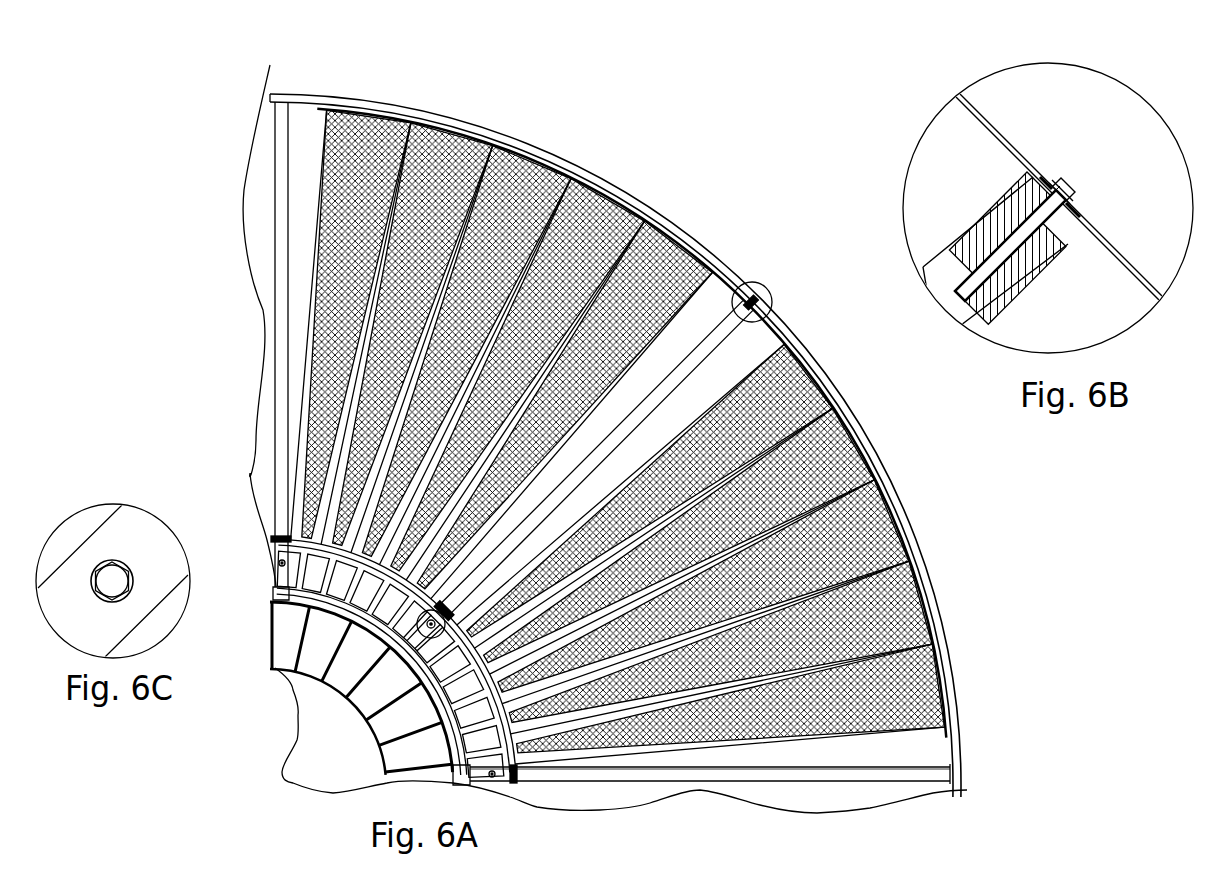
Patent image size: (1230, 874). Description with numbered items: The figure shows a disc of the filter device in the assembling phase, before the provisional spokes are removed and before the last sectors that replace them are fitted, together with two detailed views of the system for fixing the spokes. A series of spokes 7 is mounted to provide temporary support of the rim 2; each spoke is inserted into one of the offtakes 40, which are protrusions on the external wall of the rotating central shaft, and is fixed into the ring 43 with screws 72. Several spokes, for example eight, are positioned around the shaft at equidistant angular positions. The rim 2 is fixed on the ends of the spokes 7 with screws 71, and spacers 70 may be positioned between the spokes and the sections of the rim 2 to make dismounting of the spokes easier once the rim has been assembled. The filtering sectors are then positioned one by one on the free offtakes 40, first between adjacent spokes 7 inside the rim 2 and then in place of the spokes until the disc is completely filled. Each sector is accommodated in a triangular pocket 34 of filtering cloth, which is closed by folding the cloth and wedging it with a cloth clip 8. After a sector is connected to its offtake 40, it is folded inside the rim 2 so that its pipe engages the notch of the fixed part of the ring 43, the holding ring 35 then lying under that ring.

In FIG. 6A, the rim 2 is at (598, 170).
In FIG. 6B, the rim 2 is at (997, 152).
In FIG. 6A, the spoke 7 is at (741, 283).
In FIG. 6B, the spoke 7 is at (977, 320).
In FIG. 6C, the spoke 7 is at (80, 567).
In FIG. 6A, the cloth clip 8 is at (400, 114).
In FIG. 6A, the triangular pocket 34 is at (618, 437).
In FIG. 6A, the holding ring 35 is at (275, 548).
In FIG. 6A, the offtake 40 is at (403, 647).
In FIG. 6A, the ring 43 is at (515, 793).
In FIG. 6B, the spacer 70 is at (1050, 257).
In FIG. 6B, the screw 71 is at (1000, 257).
In FIG. 6C, the screw 72 is at (114, 572).